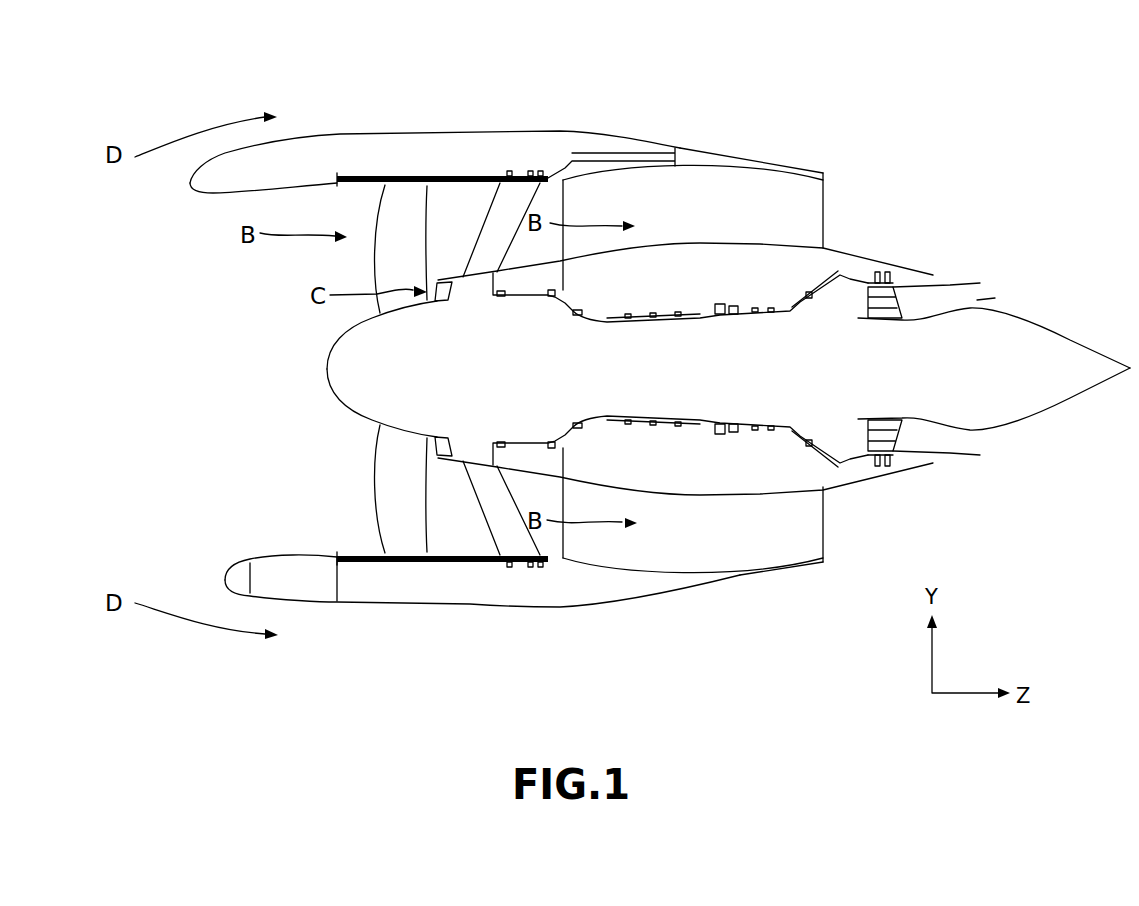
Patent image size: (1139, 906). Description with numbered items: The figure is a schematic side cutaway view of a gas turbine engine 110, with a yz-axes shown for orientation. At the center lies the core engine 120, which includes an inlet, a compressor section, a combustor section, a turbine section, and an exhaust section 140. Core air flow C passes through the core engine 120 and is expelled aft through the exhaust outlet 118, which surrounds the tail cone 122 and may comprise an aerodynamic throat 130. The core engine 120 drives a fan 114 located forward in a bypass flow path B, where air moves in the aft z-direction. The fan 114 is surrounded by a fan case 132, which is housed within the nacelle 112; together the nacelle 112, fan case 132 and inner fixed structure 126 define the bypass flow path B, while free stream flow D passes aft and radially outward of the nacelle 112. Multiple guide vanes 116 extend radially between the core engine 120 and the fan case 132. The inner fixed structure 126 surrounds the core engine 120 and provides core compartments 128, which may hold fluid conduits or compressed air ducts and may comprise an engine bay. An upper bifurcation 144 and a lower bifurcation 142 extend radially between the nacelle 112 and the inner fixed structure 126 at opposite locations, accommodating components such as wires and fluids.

The gas turbine engine 110 is at (834, 85).
The nacelle 112 is at (372, 122).
The fan 114 is at (383, 480).
The guide vanes 116 is at (497, 230).
The exhaust outlet 118 is at (995, 298).
The core engine 120 is at (706, 299).
The tail cone 122 is at (1020, 403).
The inner fixed structure 126 is at (710, 233).
The core compartment 128 is at (722, 481).
The aerodynamic throat 130 is at (974, 285).
The fan case 132 is at (363, 562).
The exhaust section 140 is at (1127, 157).
The lower bifurcation 142 is at (798, 549).
The upper bifurcation 144 is at (835, 192).